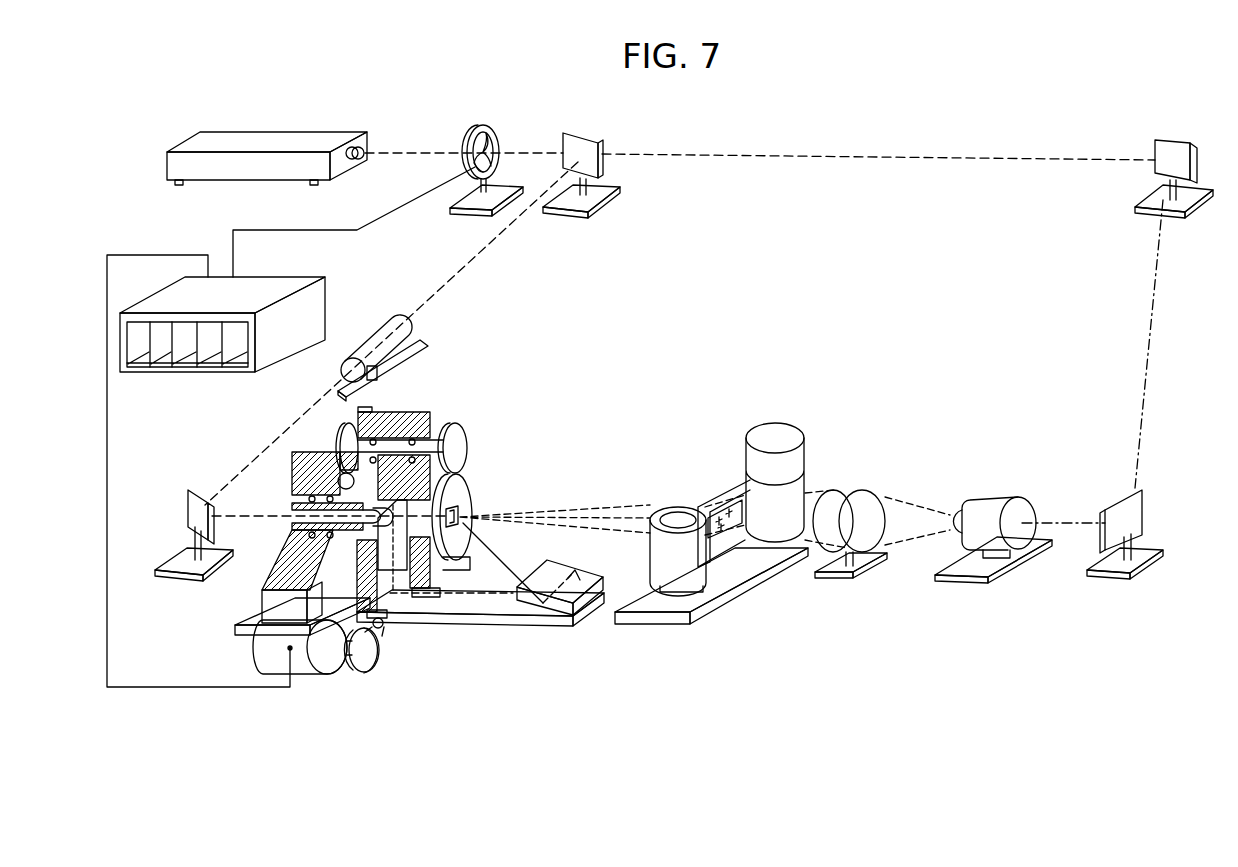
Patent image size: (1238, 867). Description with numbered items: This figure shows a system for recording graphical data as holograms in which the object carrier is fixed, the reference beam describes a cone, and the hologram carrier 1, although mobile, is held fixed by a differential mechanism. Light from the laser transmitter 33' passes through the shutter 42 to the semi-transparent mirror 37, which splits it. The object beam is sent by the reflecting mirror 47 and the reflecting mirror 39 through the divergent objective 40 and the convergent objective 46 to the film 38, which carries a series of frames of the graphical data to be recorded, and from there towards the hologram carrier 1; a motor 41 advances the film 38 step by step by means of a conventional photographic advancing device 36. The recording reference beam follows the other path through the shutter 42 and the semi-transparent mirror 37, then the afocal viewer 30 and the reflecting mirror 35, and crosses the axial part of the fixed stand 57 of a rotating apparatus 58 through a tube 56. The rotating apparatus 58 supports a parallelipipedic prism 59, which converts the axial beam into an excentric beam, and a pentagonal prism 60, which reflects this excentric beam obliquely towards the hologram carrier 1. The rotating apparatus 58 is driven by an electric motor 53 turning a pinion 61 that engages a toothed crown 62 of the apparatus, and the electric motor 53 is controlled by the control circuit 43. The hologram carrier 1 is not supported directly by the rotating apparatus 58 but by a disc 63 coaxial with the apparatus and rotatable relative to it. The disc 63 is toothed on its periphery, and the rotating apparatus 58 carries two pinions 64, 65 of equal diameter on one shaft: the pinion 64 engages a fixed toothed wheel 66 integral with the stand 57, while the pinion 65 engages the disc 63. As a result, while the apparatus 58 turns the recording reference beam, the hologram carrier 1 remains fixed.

The hologram carrier 1 is at (462, 508).
The afocal viewer 30 is at (377, 345).
The laser transmitter 33' is at (267, 141).
The reflecting mirror 35 is at (188, 503).
The advancing device 36 is at (657, 563).
The semi-transparent mirror 37 is at (577, 142).
The film 38 is at (741, 517).
The reflecting mirror 39 is at (1120, 507).
The divergent objective 40 is at (991, 508).
The motor 41 is at (803, 450).
The shutter 42 is at (481, 127).
The control circuit 43 is at (272, 282).
The convergent objective 46 is at (839, 498).
The reflecting mirror 47 is at (1165, 140).
The electric motor 53 is at (262, 650).
The tube 56 is at (290, 525).
The fixed stand 57 is at (266, 600).
The rotating apparatus 58 is at (410, 410).
The parallelipipedic prism 59 is at (385, 617).
The pentagonal prism 60 is at (580, 577).
The pinion 61 is at (372, 672).
The toothed crown 62 is at (378, 638).
The disc 63 is at (464, 493).
The pinion 64 is at (342, 430).
The pinion 65 is at (457, 436).
The fixed toothed wheel 66 is at (300, 480).